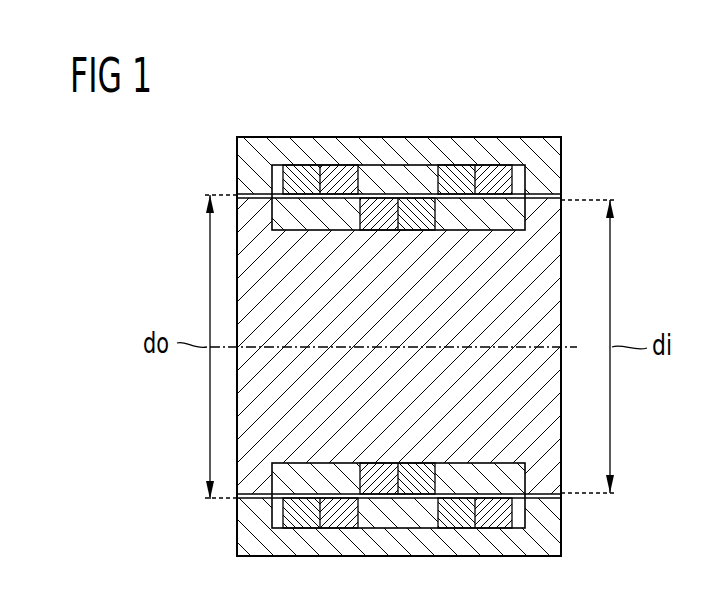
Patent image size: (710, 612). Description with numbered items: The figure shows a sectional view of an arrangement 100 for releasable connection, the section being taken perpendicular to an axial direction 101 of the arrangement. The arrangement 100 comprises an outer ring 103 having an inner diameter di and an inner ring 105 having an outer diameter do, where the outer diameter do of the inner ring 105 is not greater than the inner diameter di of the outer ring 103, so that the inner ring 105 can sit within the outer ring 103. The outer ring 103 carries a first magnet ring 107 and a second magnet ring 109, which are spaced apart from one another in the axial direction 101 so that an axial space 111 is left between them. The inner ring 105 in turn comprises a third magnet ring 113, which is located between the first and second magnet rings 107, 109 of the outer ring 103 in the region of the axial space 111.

The arrangement for releasable connection 100 is at (380, 340).
The axial direction 101 is at (568, 342).
The outer ring 103 is at (588, 181).
The inner ring 105 is at (183, 220).
The first magnet ring 107 is at (306, 166).
The second magnet ring 109 is at (497, 166).
The axial space 111 is at (438, 165).
The third magnet ring 113 is at (380, 232).